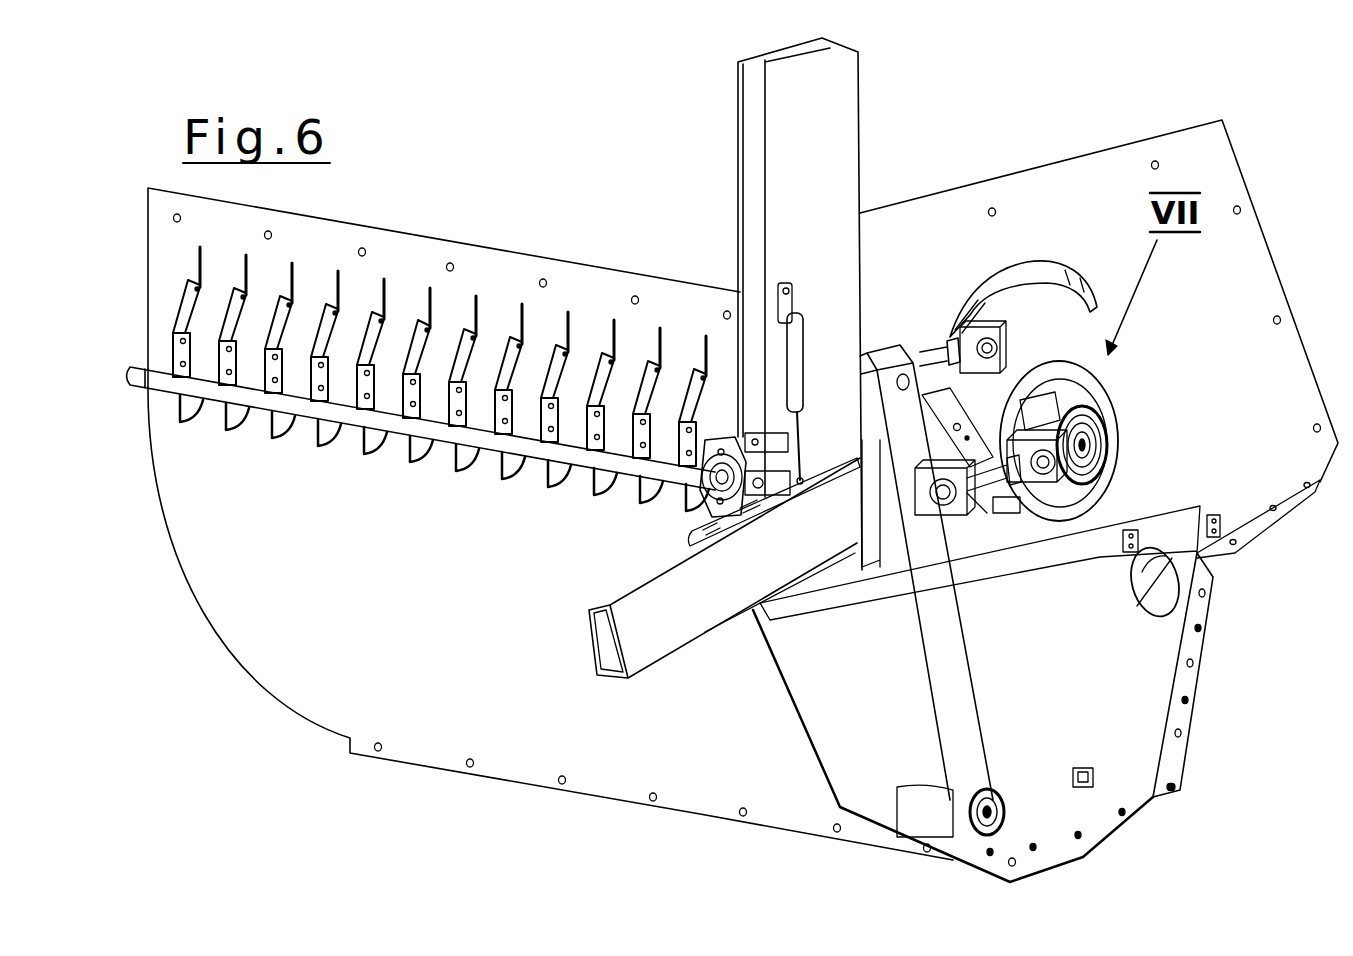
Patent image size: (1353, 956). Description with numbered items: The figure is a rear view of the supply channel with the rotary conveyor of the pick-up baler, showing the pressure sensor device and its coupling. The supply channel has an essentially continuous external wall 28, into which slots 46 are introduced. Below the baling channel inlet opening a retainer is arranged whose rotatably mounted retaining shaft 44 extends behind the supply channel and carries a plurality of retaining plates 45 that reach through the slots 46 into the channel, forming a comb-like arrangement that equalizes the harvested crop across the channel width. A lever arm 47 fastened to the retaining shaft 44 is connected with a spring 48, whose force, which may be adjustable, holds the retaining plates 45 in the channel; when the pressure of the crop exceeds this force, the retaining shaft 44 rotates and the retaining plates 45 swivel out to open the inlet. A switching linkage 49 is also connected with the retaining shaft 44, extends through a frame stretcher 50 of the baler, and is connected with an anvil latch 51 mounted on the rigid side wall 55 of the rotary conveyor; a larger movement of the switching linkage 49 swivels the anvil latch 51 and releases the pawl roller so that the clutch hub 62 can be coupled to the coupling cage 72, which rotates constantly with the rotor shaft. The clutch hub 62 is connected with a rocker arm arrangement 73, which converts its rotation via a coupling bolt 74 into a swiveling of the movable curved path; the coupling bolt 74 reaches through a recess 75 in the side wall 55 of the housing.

The external wall 28 is at (368, 607).
The retaining shaft 44 is at (487, 440).
The retaining plates 45 is at (463, 357).
The slots 46 is at (465, 358).
The lever arm 47 is at (777, 497).
The spring 48 is at (808, 342).
The switching linkage 49 is at (703, 517).
The frame stretcher 50 is at (790, 190).
The anvil latch 51 is at (990, 460).
The side wall 55 is at (1220, 307).
The clutch hub 62 is at (1113, 397).
The coupling cage 72 is at (1120, 507).
The rocker arm arrangement 73 is at (918, 345).
The coupling bolt 74 is at (1000, 350).
The recess 75 is at (1040, 260).